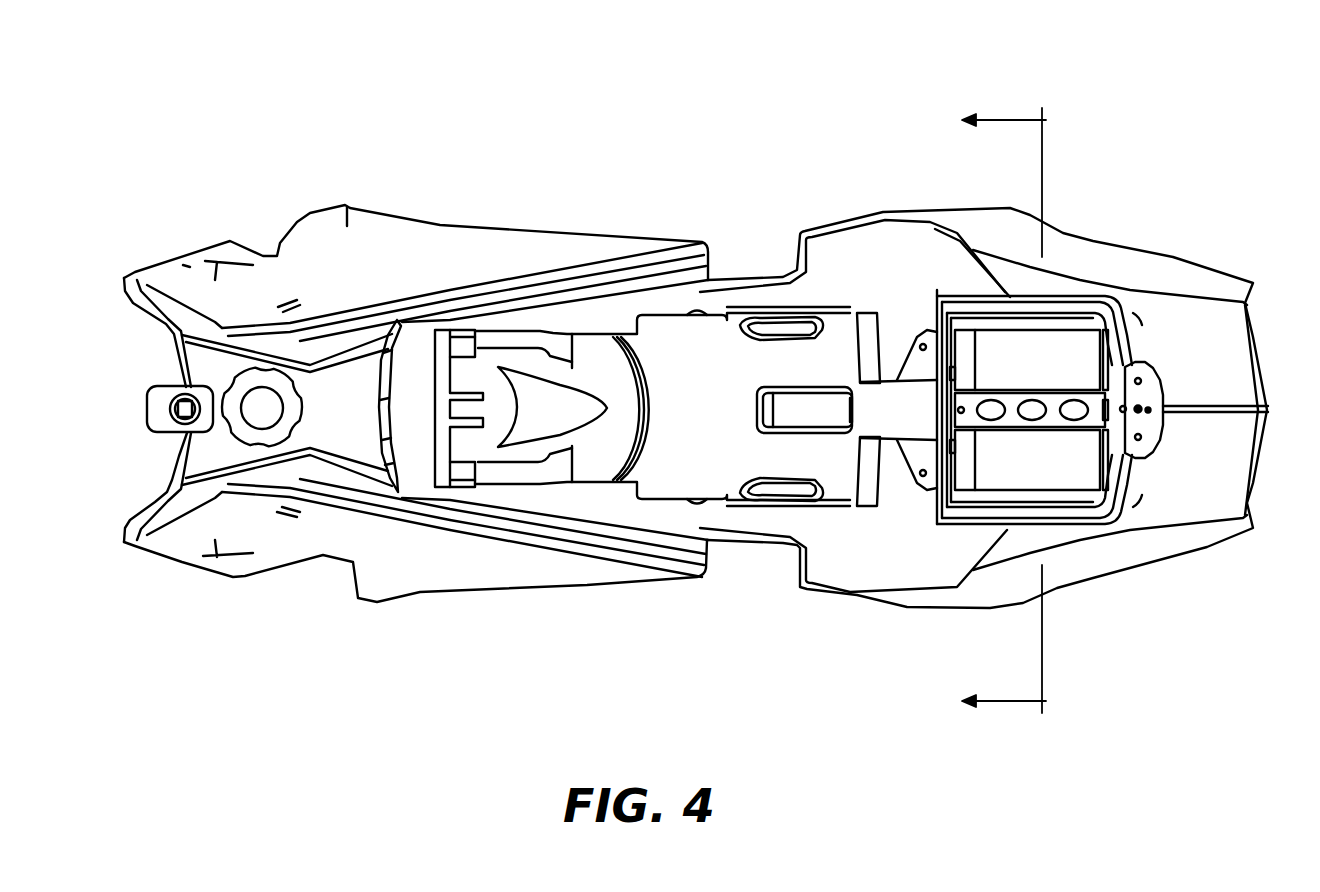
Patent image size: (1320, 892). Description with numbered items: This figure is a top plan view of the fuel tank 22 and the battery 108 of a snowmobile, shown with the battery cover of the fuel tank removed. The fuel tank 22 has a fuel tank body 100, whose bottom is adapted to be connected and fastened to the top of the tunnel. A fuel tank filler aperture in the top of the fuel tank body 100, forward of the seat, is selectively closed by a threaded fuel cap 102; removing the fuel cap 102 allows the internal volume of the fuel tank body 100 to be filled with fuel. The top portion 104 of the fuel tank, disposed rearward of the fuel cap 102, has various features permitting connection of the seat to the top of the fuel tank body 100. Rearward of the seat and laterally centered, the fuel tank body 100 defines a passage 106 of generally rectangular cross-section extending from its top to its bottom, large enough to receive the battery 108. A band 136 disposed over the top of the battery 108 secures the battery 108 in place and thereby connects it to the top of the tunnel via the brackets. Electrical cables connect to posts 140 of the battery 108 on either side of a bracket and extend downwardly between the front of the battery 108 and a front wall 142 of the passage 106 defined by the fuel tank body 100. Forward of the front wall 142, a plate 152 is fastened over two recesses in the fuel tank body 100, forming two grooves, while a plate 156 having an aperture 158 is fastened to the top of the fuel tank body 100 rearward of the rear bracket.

The fuel tank 22 is at (688, 162).
The fuel tank body 100 is at (446, 572).
The fuel cap 102 is at (253, 423).
The top portion 104 is at (671, 387).
The passage 106 is at (1064, 299).
The battery 108 is at (1088, 480).
The band 136 is at (1010, 422).
The posts 140 is at (937, 380).
The front wall 142 is at (943, 340).
The plate 152 is at (910, 445).
The plate 156 is at (1167, 377).
The aperture 158 is at (1160, 422).